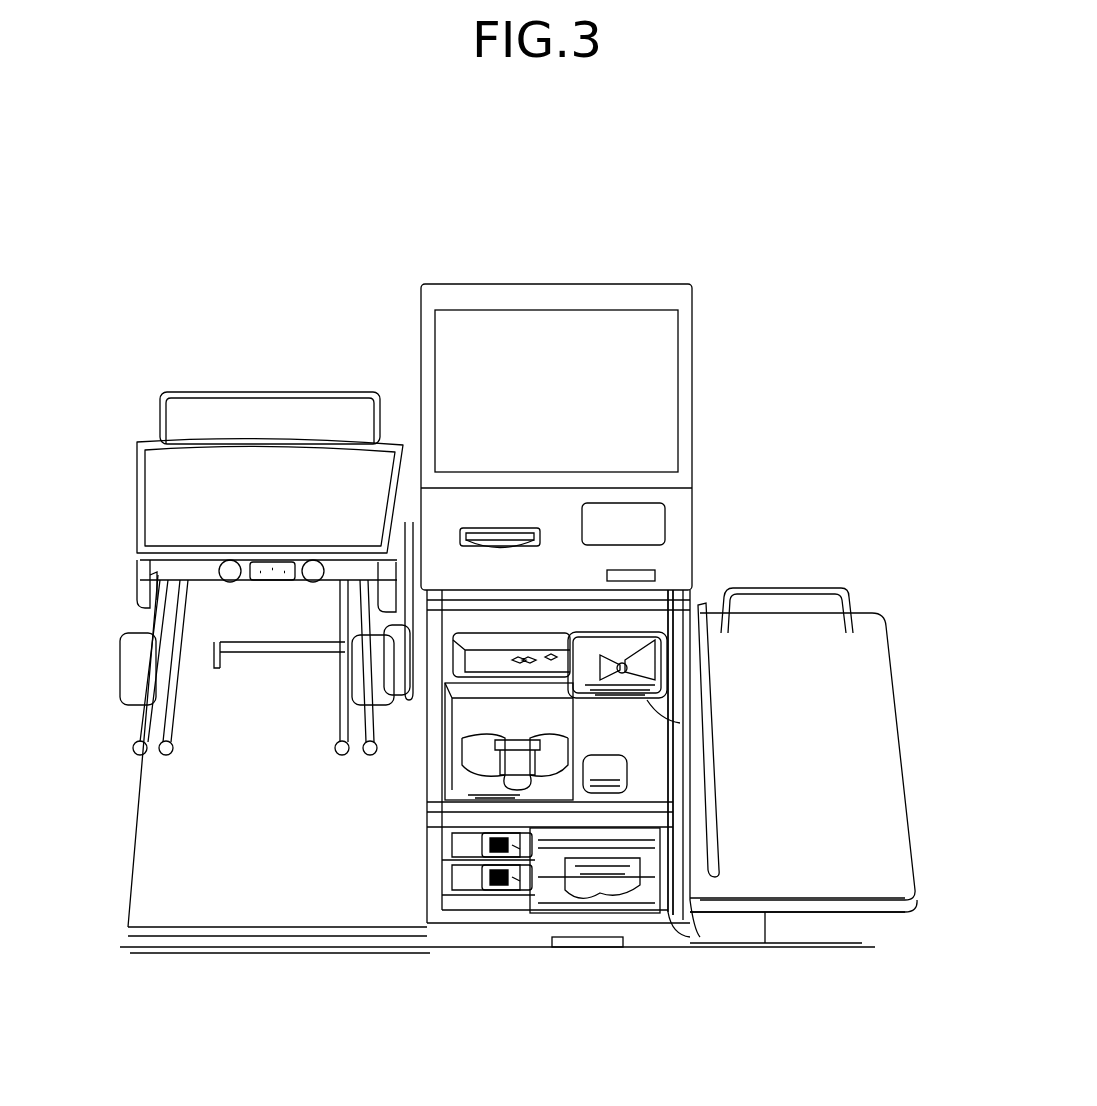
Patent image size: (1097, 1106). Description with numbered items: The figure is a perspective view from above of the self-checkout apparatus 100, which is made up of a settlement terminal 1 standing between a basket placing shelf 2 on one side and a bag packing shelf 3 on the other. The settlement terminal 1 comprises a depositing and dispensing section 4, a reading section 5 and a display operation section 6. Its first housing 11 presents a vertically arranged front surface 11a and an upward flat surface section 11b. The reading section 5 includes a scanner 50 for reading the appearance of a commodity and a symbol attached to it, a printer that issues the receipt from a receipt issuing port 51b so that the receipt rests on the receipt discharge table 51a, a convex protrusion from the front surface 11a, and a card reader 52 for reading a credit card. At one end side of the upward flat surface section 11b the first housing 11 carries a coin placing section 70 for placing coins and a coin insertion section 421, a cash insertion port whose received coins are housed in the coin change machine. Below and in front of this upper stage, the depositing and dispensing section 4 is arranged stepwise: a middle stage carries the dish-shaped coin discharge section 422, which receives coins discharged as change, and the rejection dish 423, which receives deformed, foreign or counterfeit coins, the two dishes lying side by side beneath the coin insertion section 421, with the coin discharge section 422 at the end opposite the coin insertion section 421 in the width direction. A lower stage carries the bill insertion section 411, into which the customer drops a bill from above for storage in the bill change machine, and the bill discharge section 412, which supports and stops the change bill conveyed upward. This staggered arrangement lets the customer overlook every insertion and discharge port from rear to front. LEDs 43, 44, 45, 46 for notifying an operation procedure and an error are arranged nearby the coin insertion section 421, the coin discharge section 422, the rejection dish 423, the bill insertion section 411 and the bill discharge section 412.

The self-checkout apparatus 100 is at (772, 190).
The settlement terminal 1 is at (706, 256).
The basket placing shelf 2 is at (888, 594).
The bag packing shelf 3 is at (185, 390).
The depositing and dispensing section 4 is at (688, 612).
The reading section 5 is at (688, 505).
The display operation section 6 is at (692, 406).
The first housing 11 is at (690, 670).
The front surface 11a is at (558, 506).
The upward flat surface section 11b is at (477, 617).
The scanner 50 is at (625, 525).
The receipt discharge table 51a is at (478, 532).
The receipt issuing port 51b is at (517, 528).
The card reader 52 is at (660, 572).
The coin placing section 70 is at (477, 665).
The coin insertion section 421 is at (690, 681).
The coin discharge section 422 is at (520, 790).
The rejection dish 423 is at (633, 785).
The LED 43 is at (690, 721).
The LED 44 is at (472, 762).
The LED 45 is at (606, 828).
The LED 46 is at (577, 917).
The bill insertion section 411 is at (532, 900).
The bill discharge section 412 is at (605, 920).